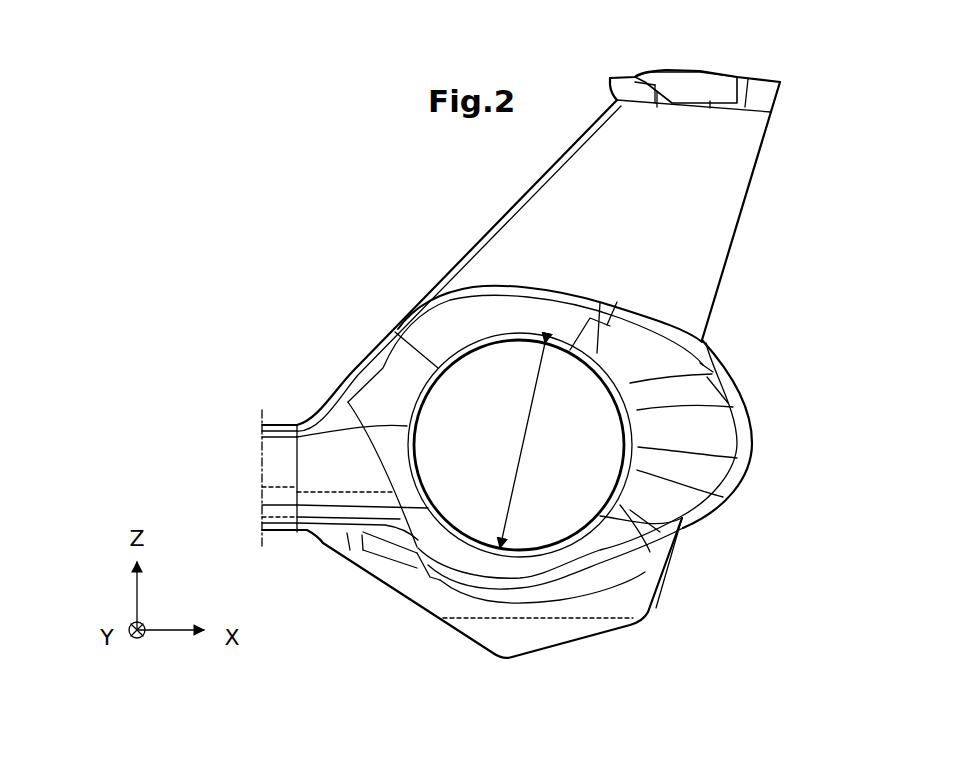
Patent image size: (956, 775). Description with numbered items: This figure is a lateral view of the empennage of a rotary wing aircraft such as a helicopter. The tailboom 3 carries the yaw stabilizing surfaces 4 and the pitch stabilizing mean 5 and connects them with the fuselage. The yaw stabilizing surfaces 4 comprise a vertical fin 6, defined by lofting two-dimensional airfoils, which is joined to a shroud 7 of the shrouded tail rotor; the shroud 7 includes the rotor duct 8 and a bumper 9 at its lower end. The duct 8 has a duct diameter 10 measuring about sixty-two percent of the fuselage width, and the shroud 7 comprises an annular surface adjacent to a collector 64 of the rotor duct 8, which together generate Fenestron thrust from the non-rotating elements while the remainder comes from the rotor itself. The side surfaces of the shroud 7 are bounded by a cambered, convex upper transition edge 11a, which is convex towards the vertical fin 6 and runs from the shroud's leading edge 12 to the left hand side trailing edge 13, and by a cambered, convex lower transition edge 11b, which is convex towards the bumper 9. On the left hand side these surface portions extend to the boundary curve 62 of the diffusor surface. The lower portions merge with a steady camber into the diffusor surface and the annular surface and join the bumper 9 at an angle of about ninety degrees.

The tailboom 3 is at (277, 460).
The yaw stabilizing surfaces 4 is at (762, 288).
The pitch stabilizing mean 5 is at (695, 86).
The vertical fin 6 is at (732, 180).
The shroud 7 is at (377, 397).
The rotor duct 8 is at (410, 465).
The bumper 9 is at (473, 627).
The duct diameter 10 is at (518, 453).
The upper transition edge 11a is at (485, 296).
The lower transition edge 11b is at (643, 567).
The leading edge 12 is at (378, 332).
The left hand side trailing edge 13 is at (717, 383).
The boundary curve 62 is at (420, 413).
The collector 64 is at (477, 340).